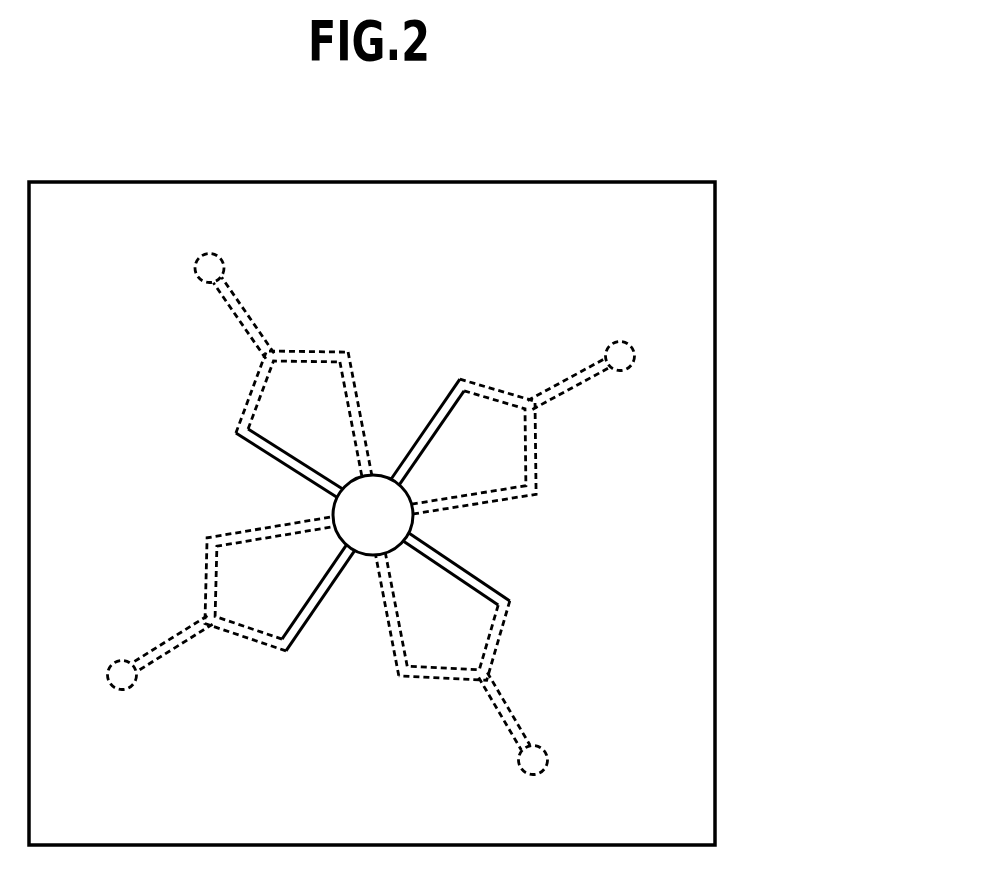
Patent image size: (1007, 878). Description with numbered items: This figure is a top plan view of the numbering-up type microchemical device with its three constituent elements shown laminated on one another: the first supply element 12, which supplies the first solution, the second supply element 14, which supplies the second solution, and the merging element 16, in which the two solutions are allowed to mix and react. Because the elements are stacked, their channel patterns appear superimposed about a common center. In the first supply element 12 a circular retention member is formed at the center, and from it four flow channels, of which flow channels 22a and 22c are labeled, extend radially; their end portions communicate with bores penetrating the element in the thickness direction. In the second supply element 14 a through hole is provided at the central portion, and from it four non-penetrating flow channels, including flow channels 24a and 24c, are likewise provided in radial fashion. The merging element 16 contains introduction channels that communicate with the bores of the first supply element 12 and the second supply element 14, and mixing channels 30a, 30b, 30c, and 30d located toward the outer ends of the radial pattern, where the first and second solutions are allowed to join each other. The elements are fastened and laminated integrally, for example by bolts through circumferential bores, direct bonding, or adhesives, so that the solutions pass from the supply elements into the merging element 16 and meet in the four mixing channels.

The first supply element 12 is at (452, 467).
The second supply element 14 is at (452, 467).
The merging element 16 is at (603, 181).
The flow channel 22a is at (257, 440).
The flow channel 22c is at (480, 577).
The flow channel 24a is at (357, 387).
The flow channel 24c is at (383, 627).
The mixing channel 30a is at (230, 313).
The mixing channel 30b is at (170, 650).
The mixing channel 30c is at (517, 717).
The mixing channel 30d is at (580, 387).